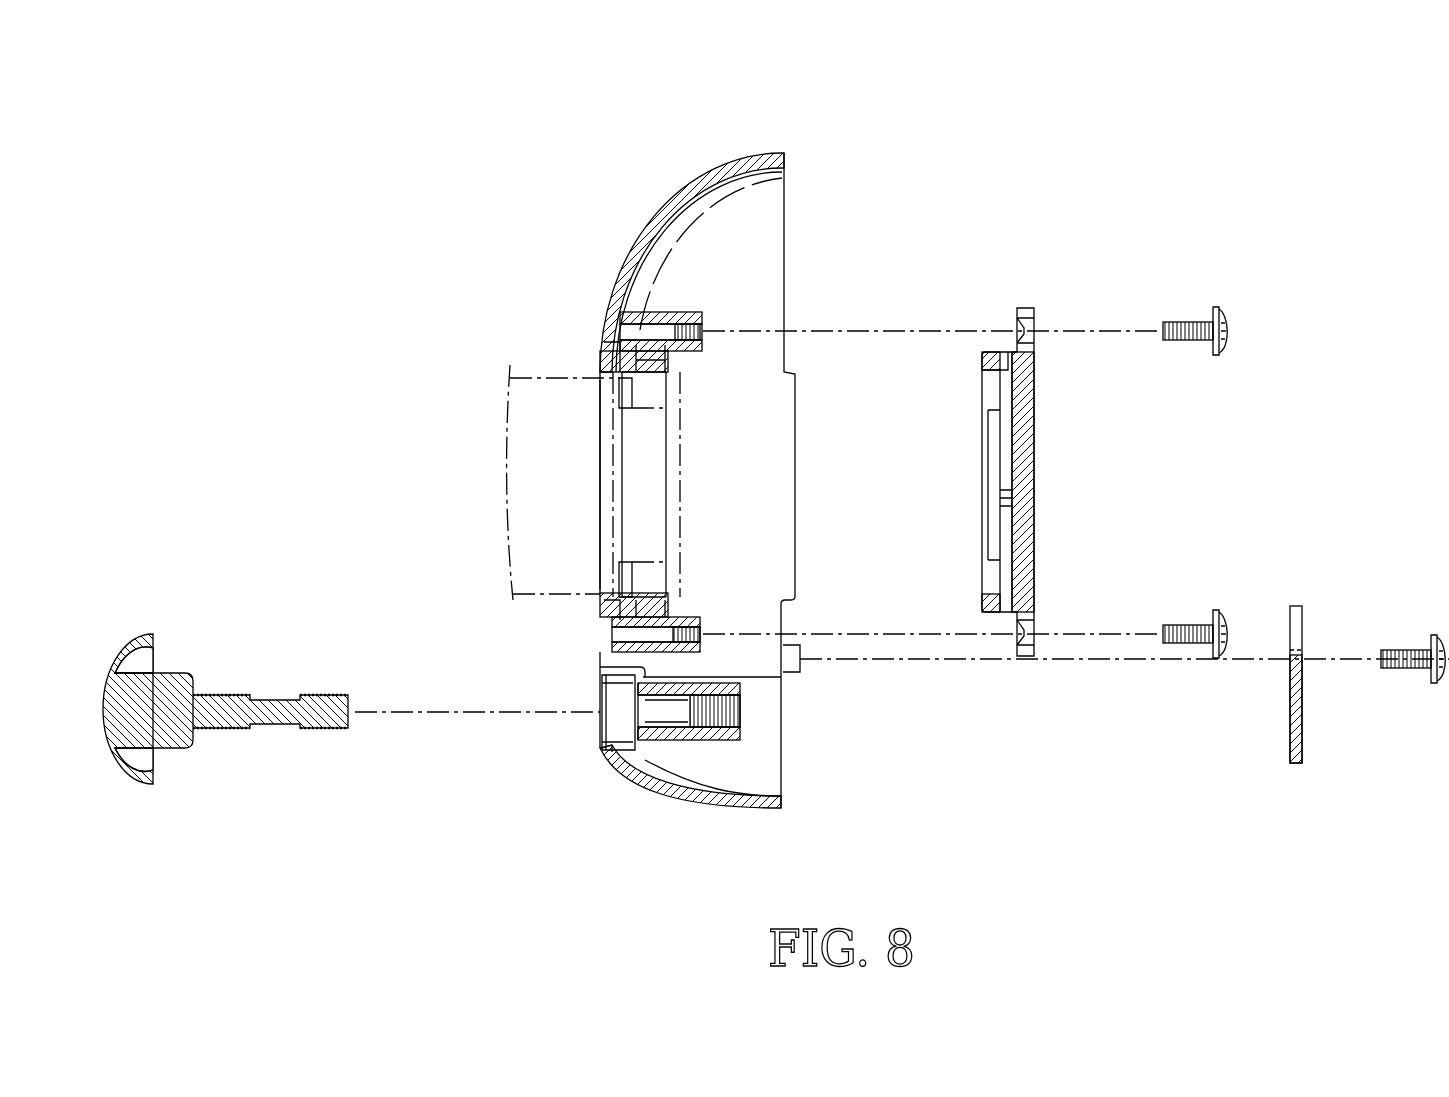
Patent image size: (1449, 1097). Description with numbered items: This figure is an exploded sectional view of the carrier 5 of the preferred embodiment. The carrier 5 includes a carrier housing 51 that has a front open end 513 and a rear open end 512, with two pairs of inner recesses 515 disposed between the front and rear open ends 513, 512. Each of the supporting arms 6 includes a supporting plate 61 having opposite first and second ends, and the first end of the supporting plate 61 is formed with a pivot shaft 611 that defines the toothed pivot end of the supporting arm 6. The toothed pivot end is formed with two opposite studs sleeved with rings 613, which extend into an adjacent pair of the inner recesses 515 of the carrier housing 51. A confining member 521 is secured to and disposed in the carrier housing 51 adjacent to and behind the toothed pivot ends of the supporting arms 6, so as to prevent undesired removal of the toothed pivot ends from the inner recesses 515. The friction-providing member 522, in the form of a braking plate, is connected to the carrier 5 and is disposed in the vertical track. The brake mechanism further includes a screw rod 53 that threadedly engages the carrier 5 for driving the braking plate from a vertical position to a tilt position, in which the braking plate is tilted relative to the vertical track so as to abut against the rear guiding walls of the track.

The carrier 5 is at (510, 740).
The carrier housing 51 is at (786, 208).
The rear open end 512 is at (786, 233).
The front open end 513 is at (607, 455).
The inner recesses 515 is at (600, 365).
The screw rod 53 is at (223, 643).
The confining member 521 is at (1035, 493).
The friction-providing member 522 is at (1303, 715).
The supporting arms 6 is at (598, 491).
The supporting plate 61 is at (560, 592).
The pivot shaft 611 is at (640, 435).
The rings 613 is at (600, 338).